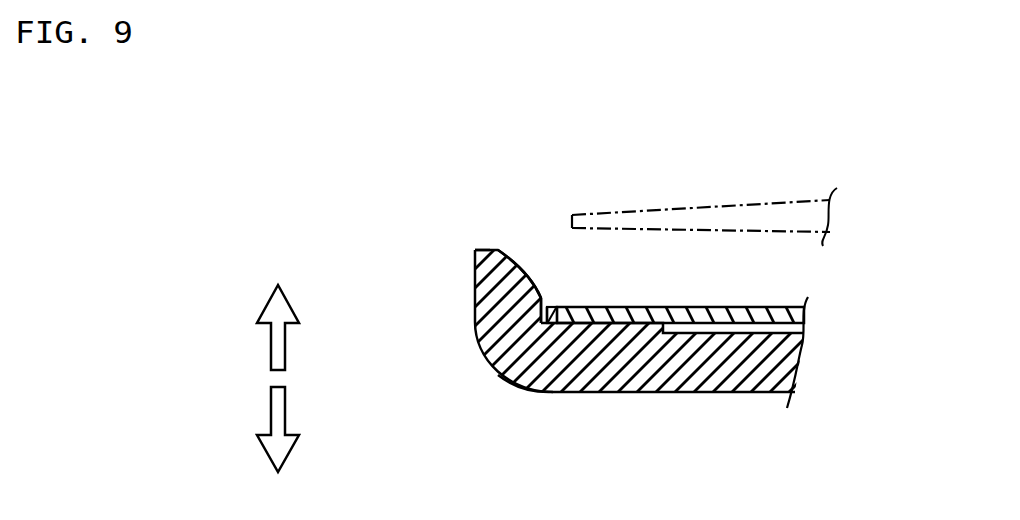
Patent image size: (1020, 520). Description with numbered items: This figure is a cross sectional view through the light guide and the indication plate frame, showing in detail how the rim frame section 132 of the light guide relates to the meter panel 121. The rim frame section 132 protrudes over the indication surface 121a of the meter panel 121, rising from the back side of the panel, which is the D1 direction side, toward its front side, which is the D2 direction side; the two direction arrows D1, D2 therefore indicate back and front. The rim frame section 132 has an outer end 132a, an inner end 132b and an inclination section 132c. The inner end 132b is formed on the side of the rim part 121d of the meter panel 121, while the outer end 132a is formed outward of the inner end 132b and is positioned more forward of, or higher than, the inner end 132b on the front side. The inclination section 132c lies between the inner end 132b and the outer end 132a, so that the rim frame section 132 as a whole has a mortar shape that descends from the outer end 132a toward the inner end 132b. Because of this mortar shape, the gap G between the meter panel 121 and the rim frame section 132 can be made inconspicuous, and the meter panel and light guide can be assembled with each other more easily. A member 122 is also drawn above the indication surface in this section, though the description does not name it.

The meter panel 121 is at (786, 310).
The indication surface 121a is at (672, 308).
The rim part 121d is at (559, 303).
The sheet member 122 is at (763, 202).
The rim frame section 132 is at (480, 328).
The outer end 132a is at (477, 250).
The inner end 132b is at (533, 336).
The inclination section 132c is at (507, 248).
The gap G is at (548, 297).
The D1 direction D1 is at (271, 412).
The D2 direction D2 is at (271, 347).